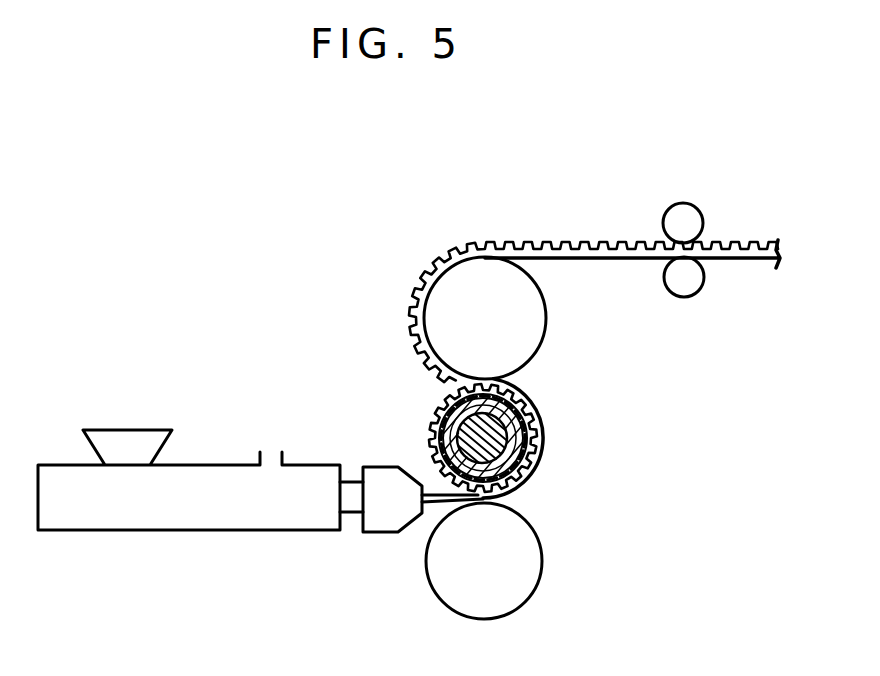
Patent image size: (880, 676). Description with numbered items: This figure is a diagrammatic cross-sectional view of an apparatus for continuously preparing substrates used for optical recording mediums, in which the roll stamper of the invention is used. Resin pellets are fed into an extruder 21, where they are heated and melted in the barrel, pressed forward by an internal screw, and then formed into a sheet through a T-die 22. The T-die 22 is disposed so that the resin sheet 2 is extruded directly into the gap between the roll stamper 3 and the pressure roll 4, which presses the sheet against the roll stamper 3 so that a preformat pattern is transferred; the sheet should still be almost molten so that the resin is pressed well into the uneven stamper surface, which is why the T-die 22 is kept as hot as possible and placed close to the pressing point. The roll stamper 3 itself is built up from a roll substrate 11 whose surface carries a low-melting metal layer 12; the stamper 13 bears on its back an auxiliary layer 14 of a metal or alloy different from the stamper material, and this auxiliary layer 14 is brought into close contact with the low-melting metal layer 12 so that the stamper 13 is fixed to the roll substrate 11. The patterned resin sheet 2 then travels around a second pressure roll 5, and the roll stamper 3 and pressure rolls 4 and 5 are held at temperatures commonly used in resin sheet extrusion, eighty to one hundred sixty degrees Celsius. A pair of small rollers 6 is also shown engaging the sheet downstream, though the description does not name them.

The resin sheet 2 is at (563, 243).
The roll stamper 3 is at (538, 448).
The pressure roll 4 is at (539, 560).
The pressure roll 5 is at (543, 322).
The pinch rollers 6 is at (697, 289).
The roll substrate 11 is at (537, 472).
The low-melting metal layer 12 is at (522, 495).
The stamper 13 is at (530, 403).
The auxiliary layer 14 is at (533, 420).
The extruder 21 is at (222, 530).
The T-die 22 is at (380, 532).